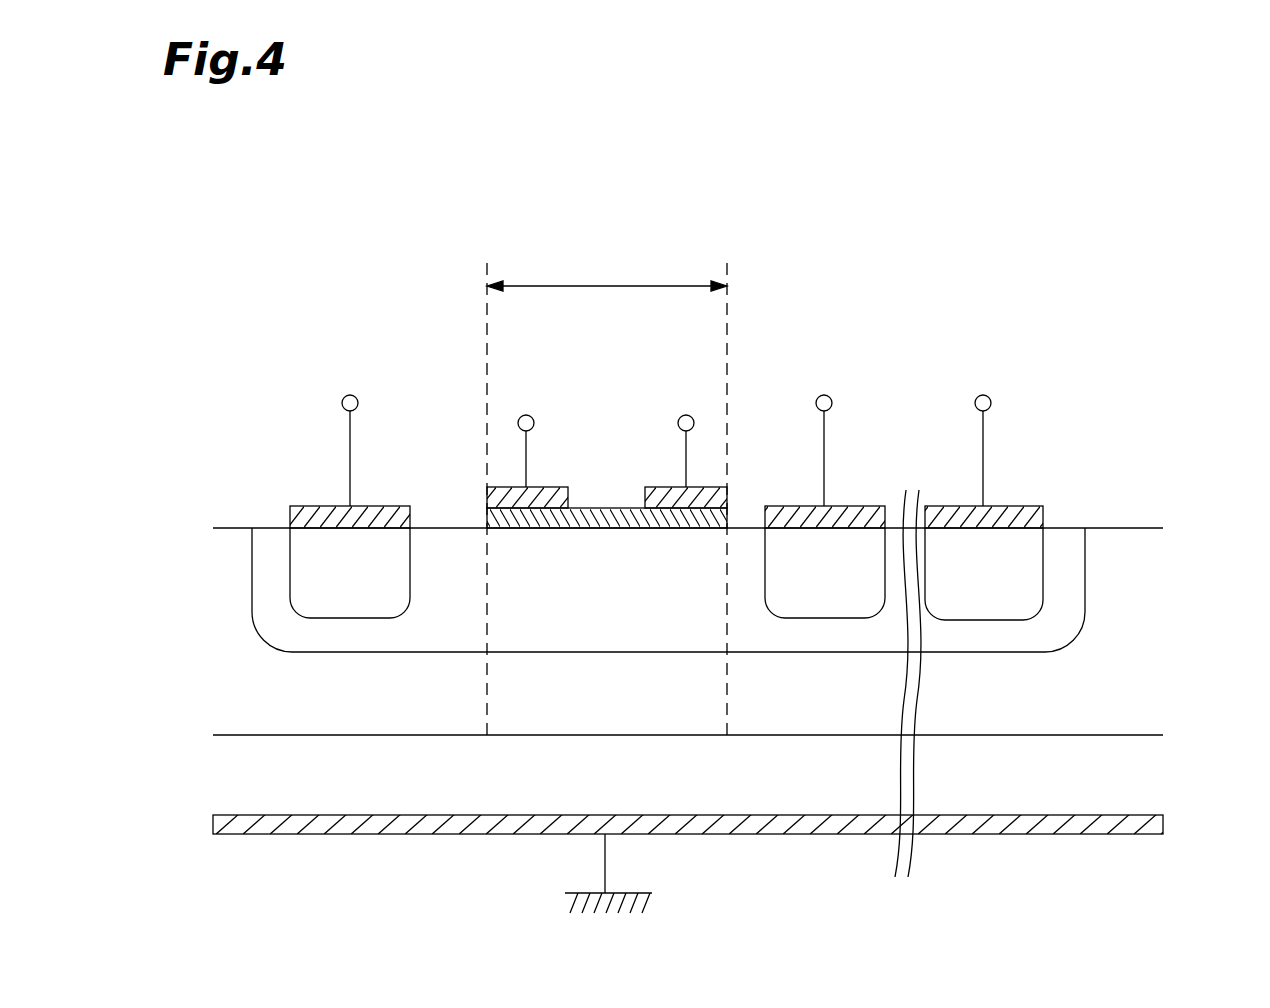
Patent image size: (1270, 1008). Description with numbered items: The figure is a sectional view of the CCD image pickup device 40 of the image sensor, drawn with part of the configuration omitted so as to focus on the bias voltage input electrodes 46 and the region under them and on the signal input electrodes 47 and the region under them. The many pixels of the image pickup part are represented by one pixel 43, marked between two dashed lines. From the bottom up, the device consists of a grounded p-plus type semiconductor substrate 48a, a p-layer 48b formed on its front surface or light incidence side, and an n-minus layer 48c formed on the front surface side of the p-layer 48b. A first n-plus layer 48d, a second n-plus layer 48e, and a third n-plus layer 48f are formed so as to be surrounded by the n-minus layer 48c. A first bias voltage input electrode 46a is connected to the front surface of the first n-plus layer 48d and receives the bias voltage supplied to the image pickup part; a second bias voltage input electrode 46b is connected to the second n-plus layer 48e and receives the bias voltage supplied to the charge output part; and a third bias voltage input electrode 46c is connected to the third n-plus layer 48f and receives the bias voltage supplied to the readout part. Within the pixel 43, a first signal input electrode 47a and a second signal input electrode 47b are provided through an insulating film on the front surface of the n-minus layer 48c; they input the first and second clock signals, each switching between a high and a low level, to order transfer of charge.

The CCD image pickup device 40 is at (1083, 298).
The pixel 43 is at (699, 284).
The bias voltage input electrodes 46 is at (937, 186).
The first bias voltage input electrode 46a is at (408, 510).
The second bias voltage input electrode 46b is at (787, 506).
The third bias voltage input electrode 46c is at (952, 506).
The signal input electrodes 47 is at (675, 333).
The first signal input electrode 47a is at (562, 487).
The second signal input electrode 47b is at (660, 488).
The p+ type semiconductor substrate 48a is at (1138, 778).
The p-layer 48b is at (1123, 693).
The n- layer 48c is at (1050, 635).
The first n+ layer 48d is at (305, 583).
The second n+ layer 48e is at (862, 601).
The third n+ layer 48f is at (1020, 566).